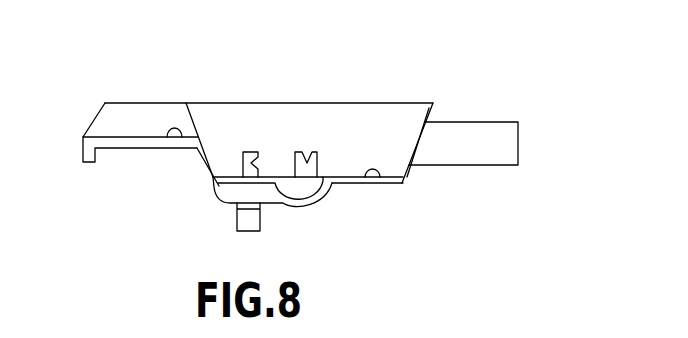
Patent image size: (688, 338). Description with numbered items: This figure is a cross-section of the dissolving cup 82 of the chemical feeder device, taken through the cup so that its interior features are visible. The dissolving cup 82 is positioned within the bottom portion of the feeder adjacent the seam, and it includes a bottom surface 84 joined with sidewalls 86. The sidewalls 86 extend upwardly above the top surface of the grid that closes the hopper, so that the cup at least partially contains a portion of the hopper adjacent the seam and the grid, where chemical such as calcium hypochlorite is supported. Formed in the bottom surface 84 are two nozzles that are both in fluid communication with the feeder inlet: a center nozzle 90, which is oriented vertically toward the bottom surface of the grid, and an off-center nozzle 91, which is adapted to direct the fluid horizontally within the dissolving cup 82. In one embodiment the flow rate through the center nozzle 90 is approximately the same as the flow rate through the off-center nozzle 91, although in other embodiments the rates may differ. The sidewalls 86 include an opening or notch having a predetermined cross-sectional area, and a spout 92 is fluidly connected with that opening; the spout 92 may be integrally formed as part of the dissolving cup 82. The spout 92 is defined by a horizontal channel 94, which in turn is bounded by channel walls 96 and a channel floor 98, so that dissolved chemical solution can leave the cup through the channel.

The dissolving cup 82 is at (455, 59).
The bottom surface 84 is at (380, 178).
The sidewalls 86 is at (418, 137).
The center nozzle 90 is at (318, 152).
The off-center nozzle 91 is at (255, 151).
The spout 92 is at (128, 102).
The horizontal channel 94 is at (108, 135).
The channel walls 96 is at (152, 112).
The channel floor 98 is at (169, 138).